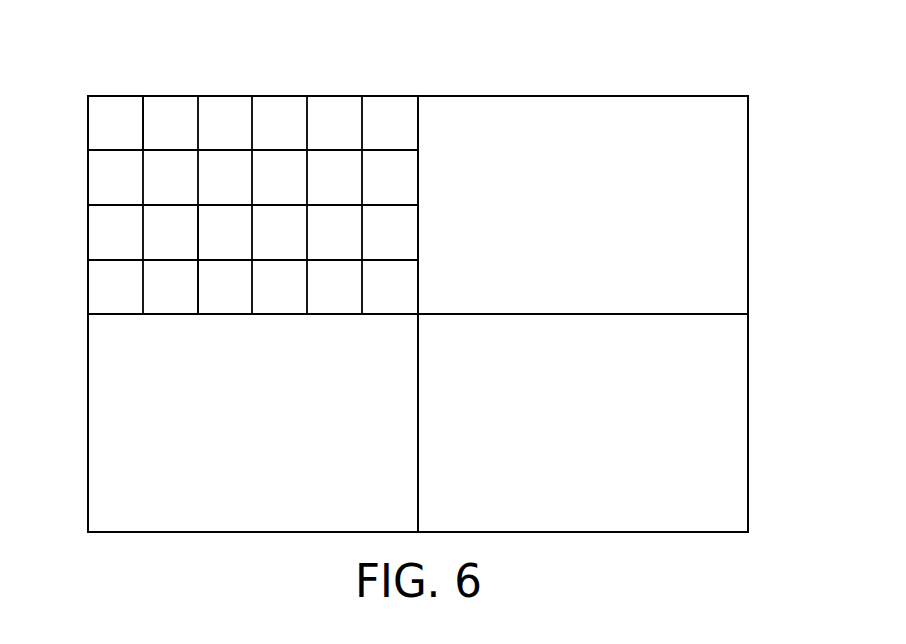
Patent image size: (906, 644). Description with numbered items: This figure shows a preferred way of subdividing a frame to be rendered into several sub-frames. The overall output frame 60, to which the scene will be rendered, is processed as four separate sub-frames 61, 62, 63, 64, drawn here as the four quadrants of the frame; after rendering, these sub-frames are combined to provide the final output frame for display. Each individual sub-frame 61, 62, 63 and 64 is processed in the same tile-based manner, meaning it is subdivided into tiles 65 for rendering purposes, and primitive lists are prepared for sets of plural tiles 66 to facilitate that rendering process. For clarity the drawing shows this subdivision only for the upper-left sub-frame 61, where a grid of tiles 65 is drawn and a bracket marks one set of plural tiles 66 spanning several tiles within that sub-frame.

The output frame 60 is at (99, 69).
The sub-frame 61 is at (278, 95).
The sub-frame 62 is at (749, 206).
The sub-frame 63 is at (749, 425).
The sub-frame 64 is at (88, 425).
The tile 65 is at (98, 126).
The set of plural tiles 66 is at (198, 322).